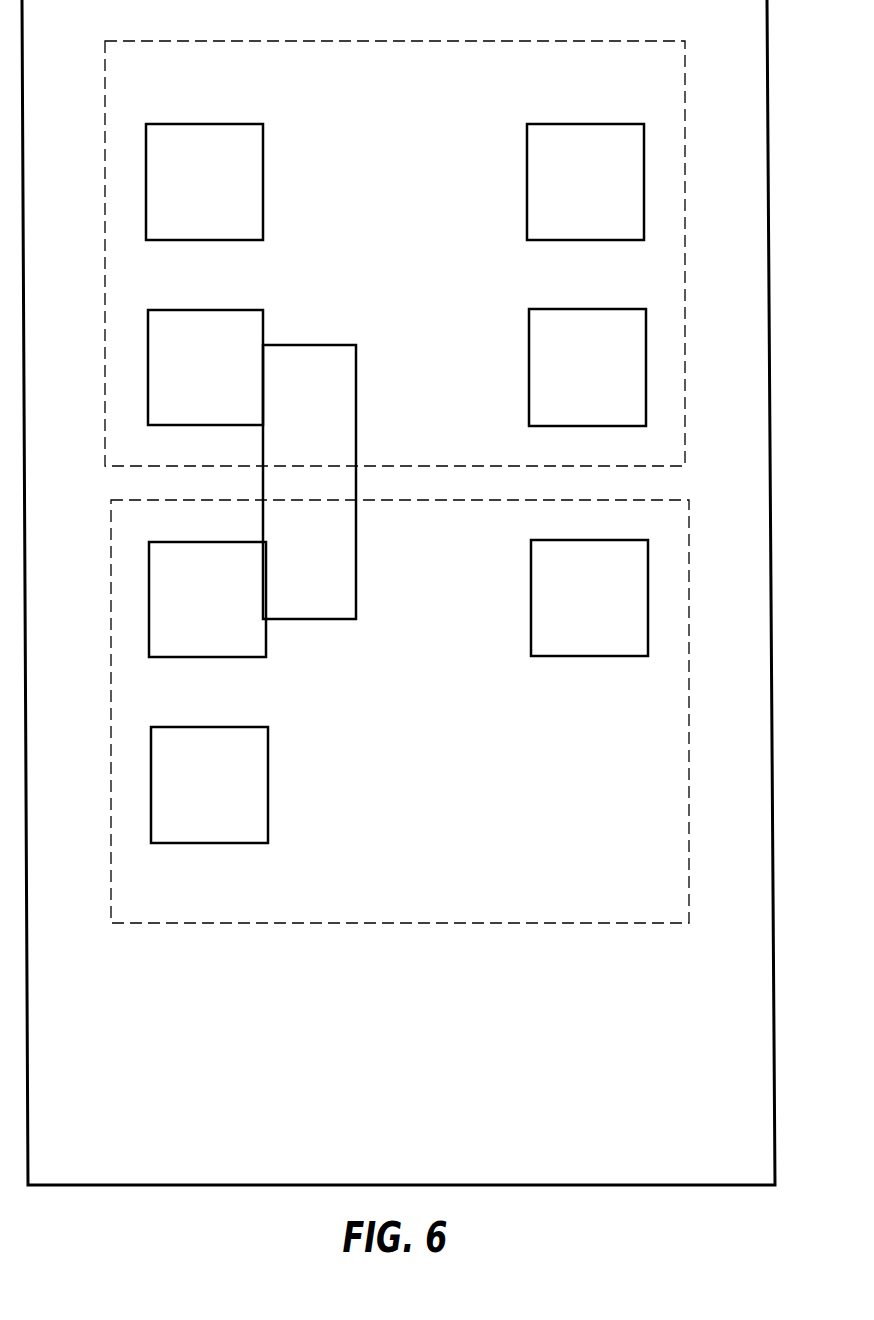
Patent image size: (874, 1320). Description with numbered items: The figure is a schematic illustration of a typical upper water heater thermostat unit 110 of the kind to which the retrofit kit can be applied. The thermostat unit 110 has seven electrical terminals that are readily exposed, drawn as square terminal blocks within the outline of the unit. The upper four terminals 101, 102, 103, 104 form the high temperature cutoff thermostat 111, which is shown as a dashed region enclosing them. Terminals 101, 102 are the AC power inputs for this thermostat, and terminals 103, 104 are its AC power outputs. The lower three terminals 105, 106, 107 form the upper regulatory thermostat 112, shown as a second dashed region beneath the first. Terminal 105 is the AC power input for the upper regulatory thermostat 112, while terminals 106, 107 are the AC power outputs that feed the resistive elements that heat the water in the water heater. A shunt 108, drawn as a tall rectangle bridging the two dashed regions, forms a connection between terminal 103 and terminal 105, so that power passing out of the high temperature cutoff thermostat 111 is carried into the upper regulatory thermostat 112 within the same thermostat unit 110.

The terminal 101 is at (183, 200).
The terminal 102 is at (567, 200).
The terminal 103 is at (188, 387).
The terminal 104 is at (569, 387).
The terminal 105 is at (189, 615).
The terminal 106 is at (571, 621).
The terminal 107 is at (193, 800).
The shunt 108 is at (289, 414).
The upper water heater thermostat unit 110 is at (409, 1141).
The high temperature cutoff thermostat 111 is at (381, 180).
The upper regulatory thermostat 112 is at (406, 818).